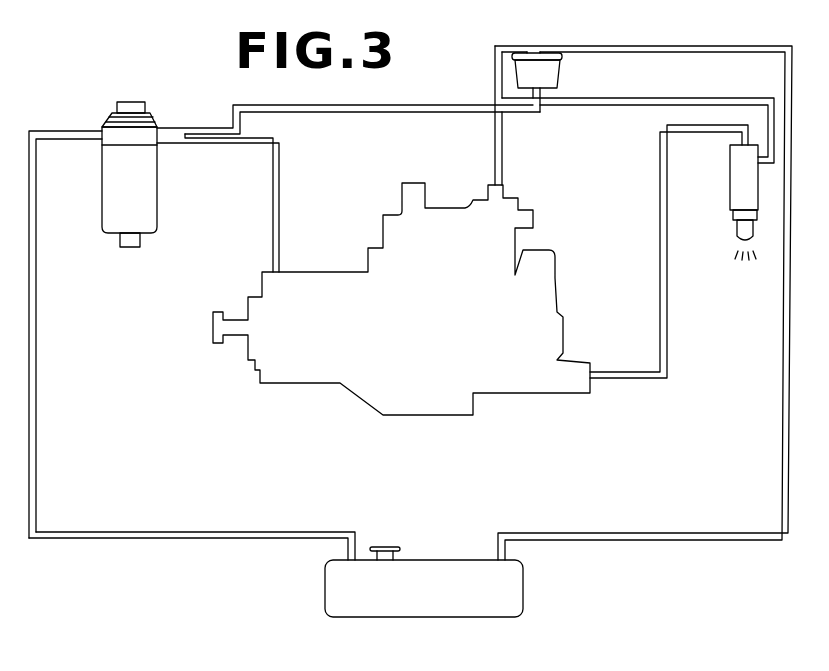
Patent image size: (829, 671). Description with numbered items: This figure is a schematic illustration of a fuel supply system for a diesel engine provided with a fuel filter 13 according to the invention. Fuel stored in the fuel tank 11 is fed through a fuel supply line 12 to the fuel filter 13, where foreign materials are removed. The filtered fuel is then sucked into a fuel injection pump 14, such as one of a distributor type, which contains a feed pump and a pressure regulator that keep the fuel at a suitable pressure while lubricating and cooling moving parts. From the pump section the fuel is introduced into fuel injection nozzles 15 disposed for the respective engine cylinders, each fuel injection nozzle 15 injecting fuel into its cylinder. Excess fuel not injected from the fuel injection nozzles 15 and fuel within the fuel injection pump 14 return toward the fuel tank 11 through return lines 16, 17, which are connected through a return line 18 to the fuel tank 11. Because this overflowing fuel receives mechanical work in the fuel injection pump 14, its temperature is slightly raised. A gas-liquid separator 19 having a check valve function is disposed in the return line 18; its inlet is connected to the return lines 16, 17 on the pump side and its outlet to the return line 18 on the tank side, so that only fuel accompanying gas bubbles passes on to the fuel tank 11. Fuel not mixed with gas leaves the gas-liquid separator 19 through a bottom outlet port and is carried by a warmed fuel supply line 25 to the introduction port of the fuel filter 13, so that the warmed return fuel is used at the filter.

The fuel tank 11 is at (445, 560).
The fuel supply line 12 is at (72, 140).
The fuel filter 13 is at (140, 100).
The fuel injection pump 14 is at (327, 383).
The fuel injection nozzle 15 is at (730, 197).
The return line 16 is at (605, 100).
The return line 17 is at (502, 155).
The return line 18 is at (785, 313).
The gas-liquid separator 19 is at (547, 67).
The warmed fuel supply line 25 is at (395, 105).